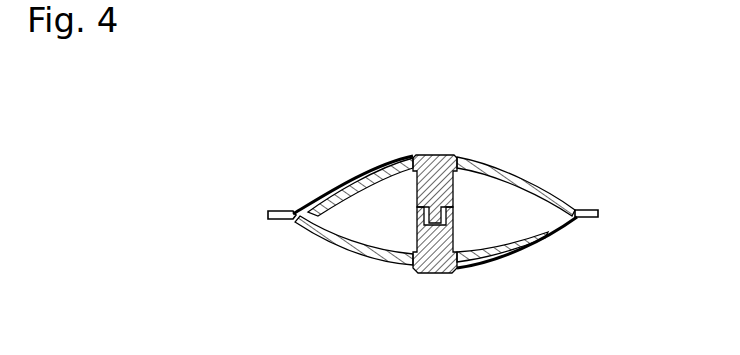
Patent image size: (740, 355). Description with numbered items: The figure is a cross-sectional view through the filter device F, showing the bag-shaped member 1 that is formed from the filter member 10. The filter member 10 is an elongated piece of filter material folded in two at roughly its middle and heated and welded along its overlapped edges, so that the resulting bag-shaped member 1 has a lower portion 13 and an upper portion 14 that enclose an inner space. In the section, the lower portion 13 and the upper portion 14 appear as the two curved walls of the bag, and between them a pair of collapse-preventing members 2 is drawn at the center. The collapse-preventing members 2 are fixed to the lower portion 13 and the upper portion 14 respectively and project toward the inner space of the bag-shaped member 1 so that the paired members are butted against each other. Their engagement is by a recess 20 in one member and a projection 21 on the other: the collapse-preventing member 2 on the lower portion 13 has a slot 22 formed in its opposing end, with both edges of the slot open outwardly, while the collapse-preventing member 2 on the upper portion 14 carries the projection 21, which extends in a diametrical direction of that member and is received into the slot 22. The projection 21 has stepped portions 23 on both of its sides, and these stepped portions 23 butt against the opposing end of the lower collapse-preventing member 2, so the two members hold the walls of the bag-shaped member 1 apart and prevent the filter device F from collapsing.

The bag-shaped member 1 is at (572, 226).
The filter member 10 is at (442, 220).
The lower portion 13 is at (540, 247).
The upper portion 14 is at (441, 161).
The collapse-preventing member 2 is at (417, 215).
The recess 20 is at (417, 264).
The projection 21 is at (381, 164).
The slot 22 is at (417, 263).
The stepped portion 23 is at (417, 261).
The filter device F is at (531, 157).